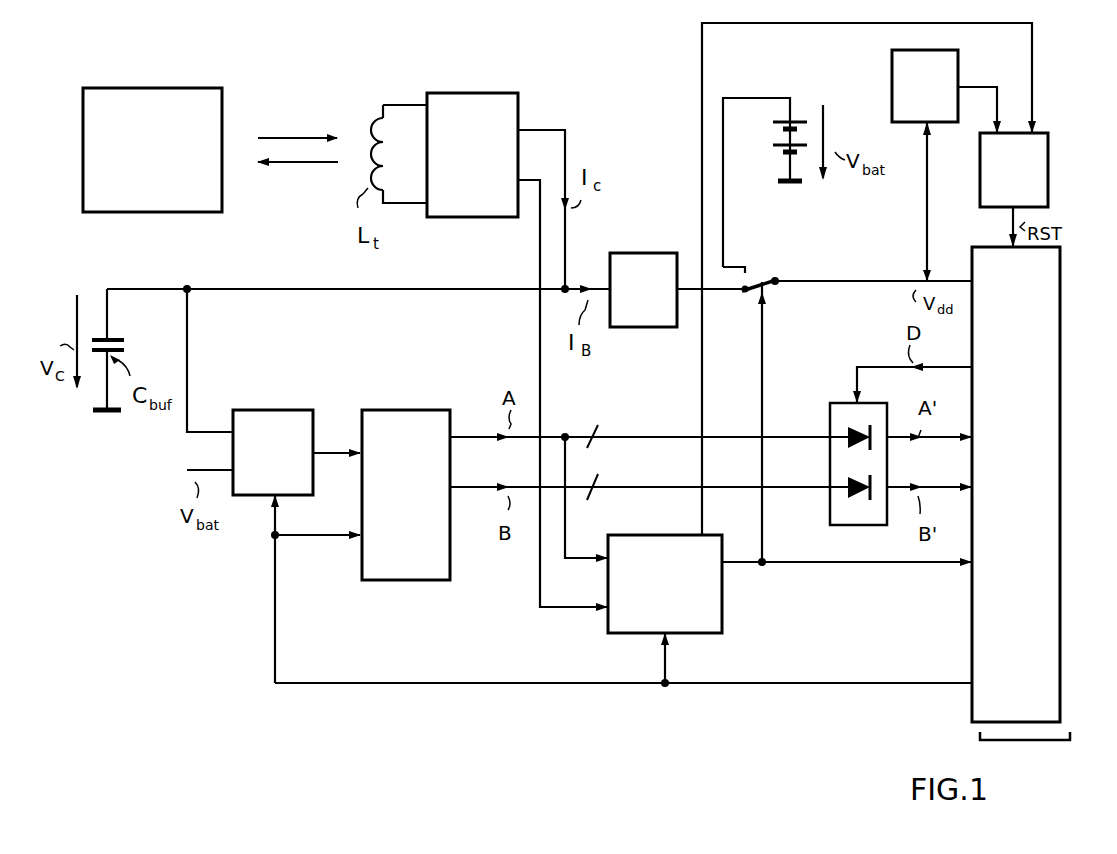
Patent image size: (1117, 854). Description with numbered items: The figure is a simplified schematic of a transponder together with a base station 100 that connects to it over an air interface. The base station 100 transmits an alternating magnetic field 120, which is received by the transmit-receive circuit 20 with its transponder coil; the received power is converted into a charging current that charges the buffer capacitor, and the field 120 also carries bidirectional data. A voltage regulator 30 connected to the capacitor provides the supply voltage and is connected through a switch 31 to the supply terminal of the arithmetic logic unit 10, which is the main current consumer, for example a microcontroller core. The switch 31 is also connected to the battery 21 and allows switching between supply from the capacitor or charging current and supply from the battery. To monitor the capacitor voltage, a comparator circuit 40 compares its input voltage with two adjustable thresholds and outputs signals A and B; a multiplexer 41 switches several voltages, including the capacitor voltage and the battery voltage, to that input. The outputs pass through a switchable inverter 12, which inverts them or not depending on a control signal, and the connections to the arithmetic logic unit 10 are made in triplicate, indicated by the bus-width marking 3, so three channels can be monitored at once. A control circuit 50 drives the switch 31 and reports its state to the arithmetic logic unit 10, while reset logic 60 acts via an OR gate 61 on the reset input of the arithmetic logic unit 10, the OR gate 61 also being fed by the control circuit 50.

The base station 100 is at (155, 100).
The alternating magnetic field 120 is at (296, 136).
The transmit-receive circuit 20 is at (519, 105).
The voltage regulator 30 is at (648, 253).
The switch 31 is at (775, 294).
The battery 21 is at (803, 115).
The reset logic 60 is at (885, 67).
The OR gate 61 is at (1053, 185).
The arithmetic logic unit 10 is at (1060, 290).
The switchable inverter 12 is at (827, 410).
The multiplexer 41 is at (305, 410).
The comparator circuit 40 is at (452, 565).
The control circuit 50 is at (725, 602).
The bus width indicator 3 is at (600, 457).